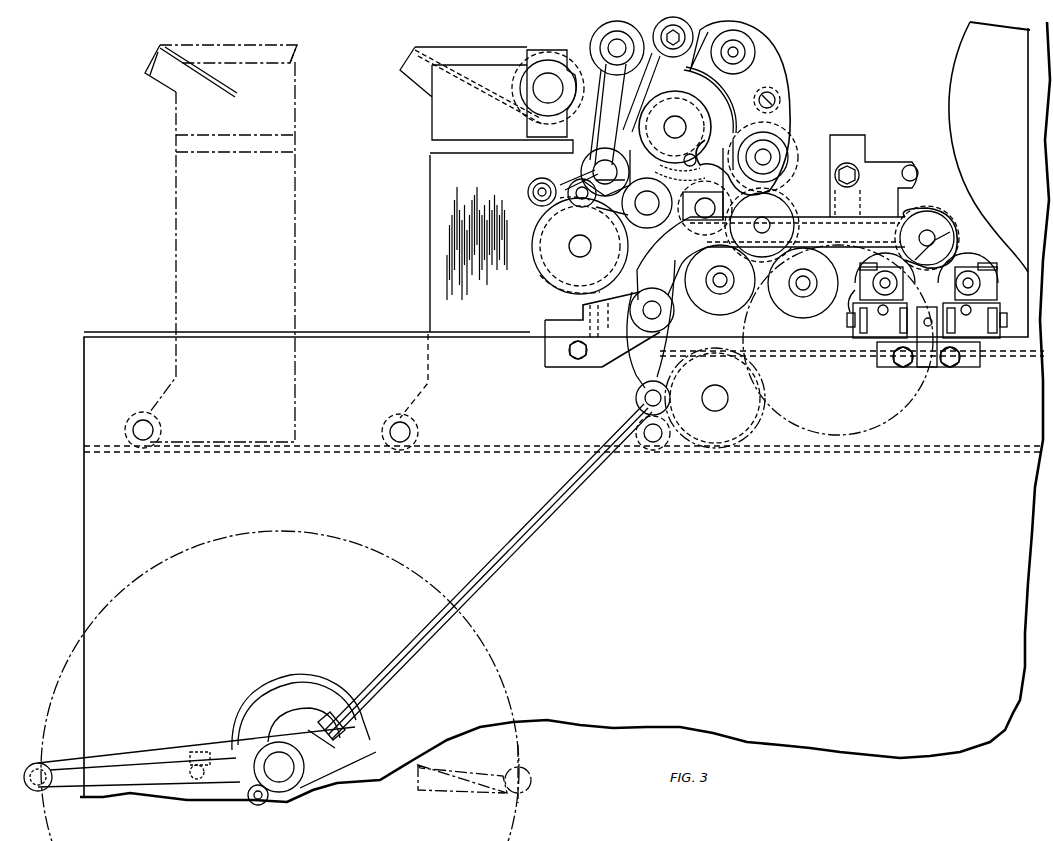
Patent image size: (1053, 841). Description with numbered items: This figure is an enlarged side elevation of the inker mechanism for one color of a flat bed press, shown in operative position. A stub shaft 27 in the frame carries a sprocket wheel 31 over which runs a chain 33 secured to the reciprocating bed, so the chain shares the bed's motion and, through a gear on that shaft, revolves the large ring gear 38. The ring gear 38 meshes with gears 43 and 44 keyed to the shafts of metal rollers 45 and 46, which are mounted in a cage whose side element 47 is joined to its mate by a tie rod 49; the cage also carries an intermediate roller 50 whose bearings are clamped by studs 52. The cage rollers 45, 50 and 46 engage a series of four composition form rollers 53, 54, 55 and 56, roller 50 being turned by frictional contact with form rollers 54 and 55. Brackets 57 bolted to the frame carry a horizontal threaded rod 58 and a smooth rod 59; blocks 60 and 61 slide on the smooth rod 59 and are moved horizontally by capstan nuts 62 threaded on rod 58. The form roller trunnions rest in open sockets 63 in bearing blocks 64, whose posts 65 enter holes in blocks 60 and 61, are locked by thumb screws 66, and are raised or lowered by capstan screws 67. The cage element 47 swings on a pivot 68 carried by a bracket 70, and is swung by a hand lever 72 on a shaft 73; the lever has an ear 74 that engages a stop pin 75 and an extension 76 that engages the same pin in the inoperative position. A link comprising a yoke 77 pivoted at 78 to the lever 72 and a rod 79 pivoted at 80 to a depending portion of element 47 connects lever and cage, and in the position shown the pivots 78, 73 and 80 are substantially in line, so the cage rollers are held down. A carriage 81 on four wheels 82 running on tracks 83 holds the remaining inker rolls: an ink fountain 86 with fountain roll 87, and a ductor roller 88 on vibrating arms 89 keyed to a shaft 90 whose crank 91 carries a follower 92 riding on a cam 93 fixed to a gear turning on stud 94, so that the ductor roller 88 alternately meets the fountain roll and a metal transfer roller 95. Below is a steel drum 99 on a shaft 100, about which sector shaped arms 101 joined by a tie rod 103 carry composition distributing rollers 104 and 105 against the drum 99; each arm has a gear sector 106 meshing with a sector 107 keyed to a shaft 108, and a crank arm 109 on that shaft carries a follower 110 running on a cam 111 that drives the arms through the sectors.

The stub shaft 27 is at (718, 410).
The sprocket wheel 31 is at (756, 425).
The chain 33 is at (835, 452).
The ring gear 38 is at (890, 425).
The gear 43 is at (792, 200).
The gear 44 is at (948, 232).
The roller 45 is at (800, 185).
The roller 46 is at (928, 210).
The cage side element 47 is at (950, 245).
The tie rod 49 is at (909, 162).
The intermediate roller 50 is at (795, 225).
The stud 52 is at (858, 160).
The composition form roller 53 is at (712, 306).
The composition form roller 54 is at (778, 306).
The composition form roller 55 is at (855, 295).
The composition form roller 56 is at (960, 262).
The bracket 57 is at (925, 360).
The horizontal threaded rod 58 is at (990, 360).
The horizontal smooth rod 59 is at (1007, 330).
The block 60 is at (878, 350).
The block 61 is at (980, 365).
The capstan nut 62 is at (860, 345).
The open socket 63 is at (928, 281).
The bearing block 64 is at (848, 316).
The post 65 is at (924, 301).
The thumb screw 66 is at (926, 320).
The capstan screw 67 is at (1002, 272).
The pivot 68 is at (652, 300).
The bracket 70 is at (565, 362).
The hand lever 72 is at (148, 752).
The shaft 73 is at (290, 762).
The projecting ear 74 is at (205, 752).
The stop pin 75 is at (190, 771).
The extension 76 is at (340, 732).
The yoke 77 is at (330, 683).
The pivot 78 is at (292, 790).
The rod 79 is at (510, 545).
The pivot 80 is at (636, 400).
The carriage 81 is at (176, 220).
The wheel 82 is at (645, 450).
The track 83 is at (320, 446).
The ink fountain 86 is at (492, 92).
The fountain roll 87 is at (530, 55).
The ductor roller 88 is at (575, 58).
The vibrating arm 89 is at (611, 93).
The shaft 90 is at (585, 160).
The crank 91 is at (560, 170).
The follower 92 is at (528, 190).
The cam 93 is at (535, 258).
The stud 94 is at (572, 240).
The metal transfer roller 95 is at (697, 32).
The steel drum 99 is at (645, 68).
The shaft 100 is at (690, 117).
The sector shaped arm 101 is at (765, 75).
The tie rod 103 is at (780, 100).
The composition distributing roller 104 is at (760, 52).
The composition distributing roller 105 is at (790, 145).
The gear sector 106 is at (675, 168).
The sector 107 is at (685, 181).
The shaft 108 is at (645, 212).
The crank arm 109 is at (594, 193).
The follower 110 is at (560, 205).
The cam 111 is at (565, 292).